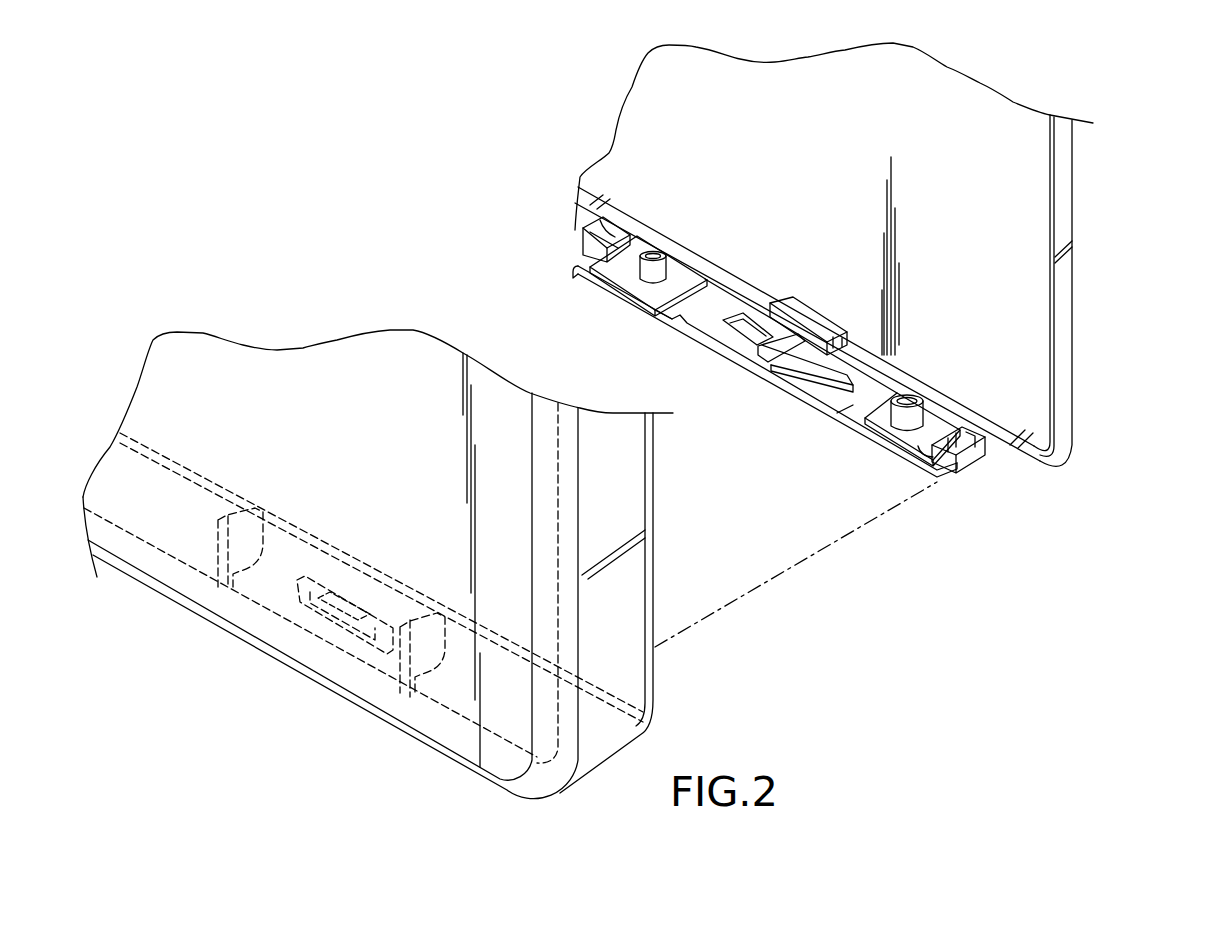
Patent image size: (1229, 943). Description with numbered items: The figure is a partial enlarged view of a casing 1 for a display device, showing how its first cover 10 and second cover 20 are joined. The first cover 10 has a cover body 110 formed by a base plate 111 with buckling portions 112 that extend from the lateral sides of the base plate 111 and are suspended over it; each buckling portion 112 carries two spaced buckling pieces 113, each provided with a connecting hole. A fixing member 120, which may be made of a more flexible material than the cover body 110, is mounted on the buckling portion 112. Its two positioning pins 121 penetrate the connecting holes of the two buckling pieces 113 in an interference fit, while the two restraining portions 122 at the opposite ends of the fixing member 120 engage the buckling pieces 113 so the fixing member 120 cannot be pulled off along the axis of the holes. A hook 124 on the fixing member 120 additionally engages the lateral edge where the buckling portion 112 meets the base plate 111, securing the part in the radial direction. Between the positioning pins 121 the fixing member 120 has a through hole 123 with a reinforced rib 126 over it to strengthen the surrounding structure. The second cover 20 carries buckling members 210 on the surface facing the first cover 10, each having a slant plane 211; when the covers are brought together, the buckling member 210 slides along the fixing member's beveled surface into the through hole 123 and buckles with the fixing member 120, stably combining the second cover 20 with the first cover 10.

The casing 1 is at (247, 161).
The first cover 10 is at (856, 260).
The cover body 110 is at (1063, 186).
The base plate 111 is at (1013, 116).
The buckling portion 112 is at (942, 400).
The buckling piece 113 is at (627, 278).
The fixing member 120 is at (778, 325).
The positioning pin 121 is at (658, 251).
The restraining portion 122 is at (625, 232).
The through hole 123 is at (757, 322).
The hook 124 is at (811, 320).
The reinforced rib 126 is at (760, 357).
The second cover 20 is at (420, 564).
The buckling member 210 is at (333, 632).
The slant plane 211 is at (357, 603).